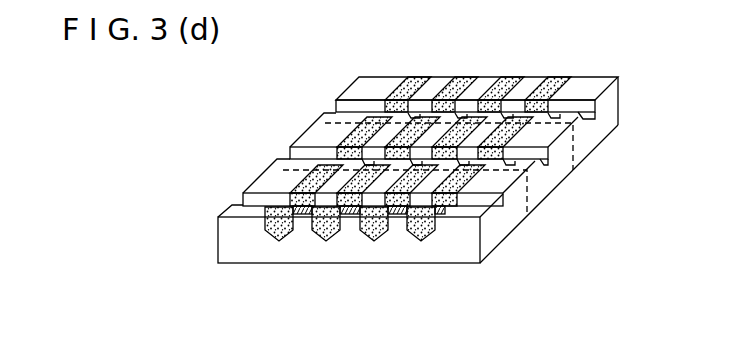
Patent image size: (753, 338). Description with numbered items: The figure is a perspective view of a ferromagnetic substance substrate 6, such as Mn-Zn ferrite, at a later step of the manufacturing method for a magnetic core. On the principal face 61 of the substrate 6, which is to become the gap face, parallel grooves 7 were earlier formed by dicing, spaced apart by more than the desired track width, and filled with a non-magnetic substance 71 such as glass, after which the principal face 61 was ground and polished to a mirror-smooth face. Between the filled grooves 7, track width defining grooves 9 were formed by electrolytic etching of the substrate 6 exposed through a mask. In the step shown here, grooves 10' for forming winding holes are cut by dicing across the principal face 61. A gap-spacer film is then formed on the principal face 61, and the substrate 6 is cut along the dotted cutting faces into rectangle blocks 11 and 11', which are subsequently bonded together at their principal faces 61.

The ferromagnetic substance substrate 6 is at (233, 247).
The non-magnetic substance 71 is at (274, 240).
The grooves for forming winding holes 10' is at (389, 157).
The principal face 61 is at (590, 82).
The parallel grooves 7 is at (416, 77).
The track width defining grooves 9 is at (505, 118).
The rectangle block 11 is at (526, 219).
The rectangle block 11' is at (590, 177).